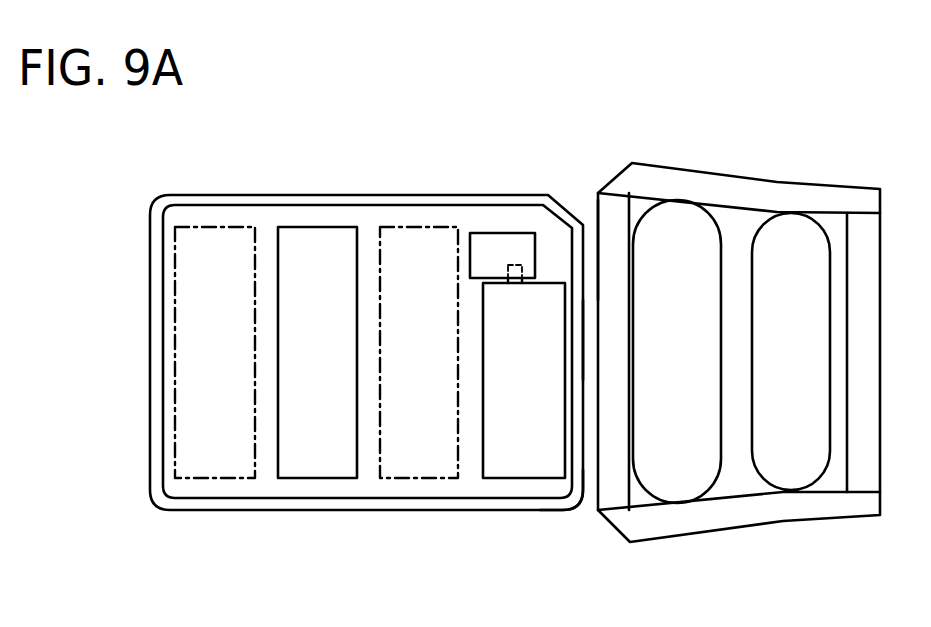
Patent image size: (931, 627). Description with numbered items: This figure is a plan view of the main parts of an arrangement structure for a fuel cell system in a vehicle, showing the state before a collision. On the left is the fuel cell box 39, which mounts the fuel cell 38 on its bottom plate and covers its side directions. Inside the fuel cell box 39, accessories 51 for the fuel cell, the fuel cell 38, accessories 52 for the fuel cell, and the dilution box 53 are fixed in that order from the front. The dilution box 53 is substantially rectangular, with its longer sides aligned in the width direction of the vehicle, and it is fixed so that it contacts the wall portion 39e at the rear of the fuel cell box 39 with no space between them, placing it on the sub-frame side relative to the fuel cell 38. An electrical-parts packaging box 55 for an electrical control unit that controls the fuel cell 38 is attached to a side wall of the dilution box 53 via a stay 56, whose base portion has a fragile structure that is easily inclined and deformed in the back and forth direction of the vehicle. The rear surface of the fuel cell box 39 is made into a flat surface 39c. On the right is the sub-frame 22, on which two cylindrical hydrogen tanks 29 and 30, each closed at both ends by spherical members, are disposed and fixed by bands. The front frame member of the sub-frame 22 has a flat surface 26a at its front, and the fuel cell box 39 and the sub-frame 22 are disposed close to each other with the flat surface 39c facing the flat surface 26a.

The fuel cell box 39 is at (345, 195).
The accessories for the fuel cell 51 is at (206, 478).
The fuel cell 38 is at (313, 478).
The accessories for the fuel cell 52 is at (416, 478).
The dilution box 53 is at (526, 478).
The electrical-parts packaging box 55 is at (486, 233).
The stay 56 is at (512, 262).
The wall portion 39e is at (575, 340).
The flat surface 39c is at (580, 452).
The sub-frame 22 is at (812, 183).
The flat surface 26a is at (598, 240).
The hydrogen tank 29 is at (680, 485).
The hydrogen tank 30 is at (793, 477).